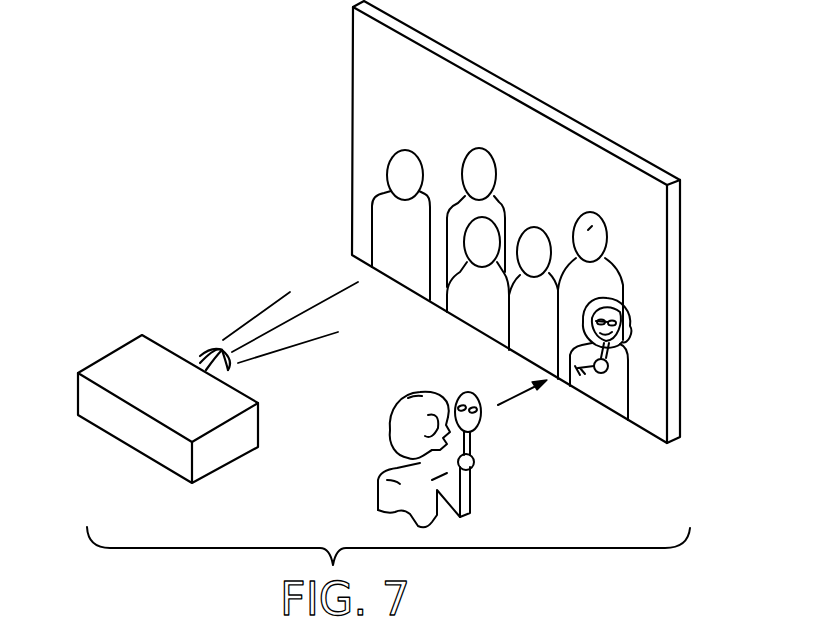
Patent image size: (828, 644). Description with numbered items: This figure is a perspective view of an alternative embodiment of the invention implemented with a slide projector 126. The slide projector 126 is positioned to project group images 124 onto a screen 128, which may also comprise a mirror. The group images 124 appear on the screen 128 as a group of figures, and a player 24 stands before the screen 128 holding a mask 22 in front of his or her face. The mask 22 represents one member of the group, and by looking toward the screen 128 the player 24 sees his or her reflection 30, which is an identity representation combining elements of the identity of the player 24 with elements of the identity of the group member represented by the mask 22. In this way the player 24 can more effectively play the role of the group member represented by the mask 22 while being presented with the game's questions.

The mask 22 is at (482, 426).
The player 24 is at (398, 485).
The reflection 30 is at (633, 335).
The group images 124 is at (588, 230).
The slide projector 126 is at (125, 360).
The screen 128 is at (437, 100).